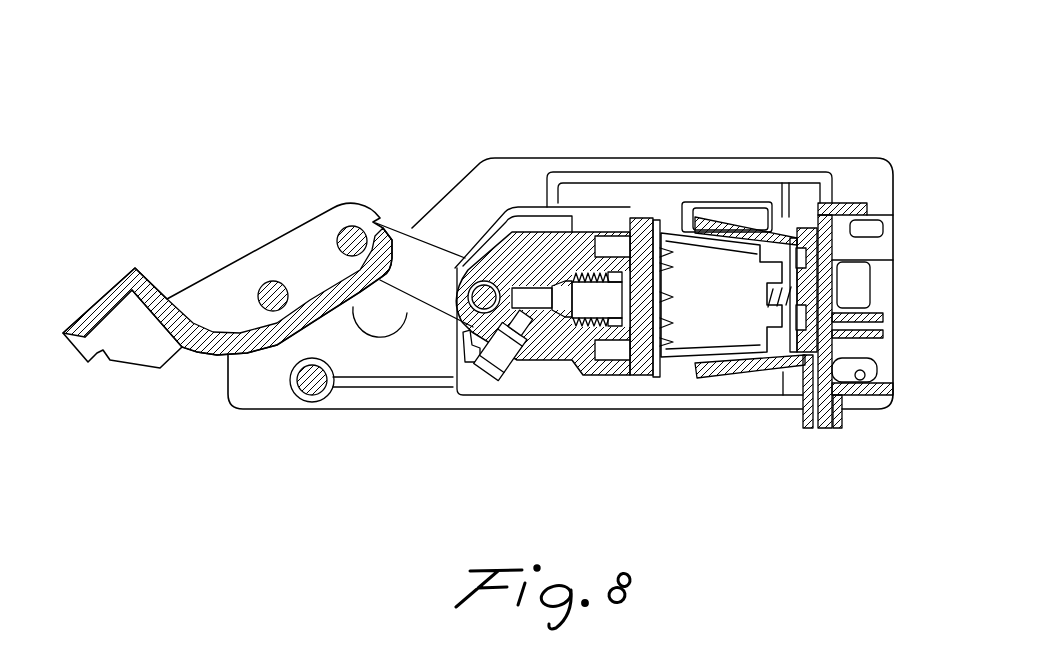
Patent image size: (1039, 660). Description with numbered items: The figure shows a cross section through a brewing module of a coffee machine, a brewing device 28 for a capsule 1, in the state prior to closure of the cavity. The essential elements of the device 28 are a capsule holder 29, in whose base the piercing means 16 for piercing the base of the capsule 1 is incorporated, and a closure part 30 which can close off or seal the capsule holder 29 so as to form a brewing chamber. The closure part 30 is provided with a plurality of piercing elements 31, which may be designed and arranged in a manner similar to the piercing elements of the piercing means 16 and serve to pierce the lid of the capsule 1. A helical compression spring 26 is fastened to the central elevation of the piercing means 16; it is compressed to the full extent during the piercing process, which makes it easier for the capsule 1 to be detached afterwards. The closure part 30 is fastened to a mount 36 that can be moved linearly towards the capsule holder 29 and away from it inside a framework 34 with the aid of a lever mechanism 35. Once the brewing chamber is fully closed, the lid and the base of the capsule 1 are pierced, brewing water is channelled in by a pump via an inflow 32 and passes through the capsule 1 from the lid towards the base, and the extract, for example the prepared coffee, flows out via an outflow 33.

The capsule 1 is at (730, 252).
The piercing means 16 is at (800, 240).
The helical compression spring 26 is at (793, 285).
The brewing device 28 is at (690, 126).
The capsule holder 29 is at (733, 372).
The closure part 30 is at (645, 375).
The piercing elements 31 is at (670, 327).
The inflow 32 is at (485, 363).
The outflow 33 is at (822, 423).
The framework 34 is at (470, 159).
The lever mechanism 35 is at (427, 290).
The mount 36 is at (545, 360).